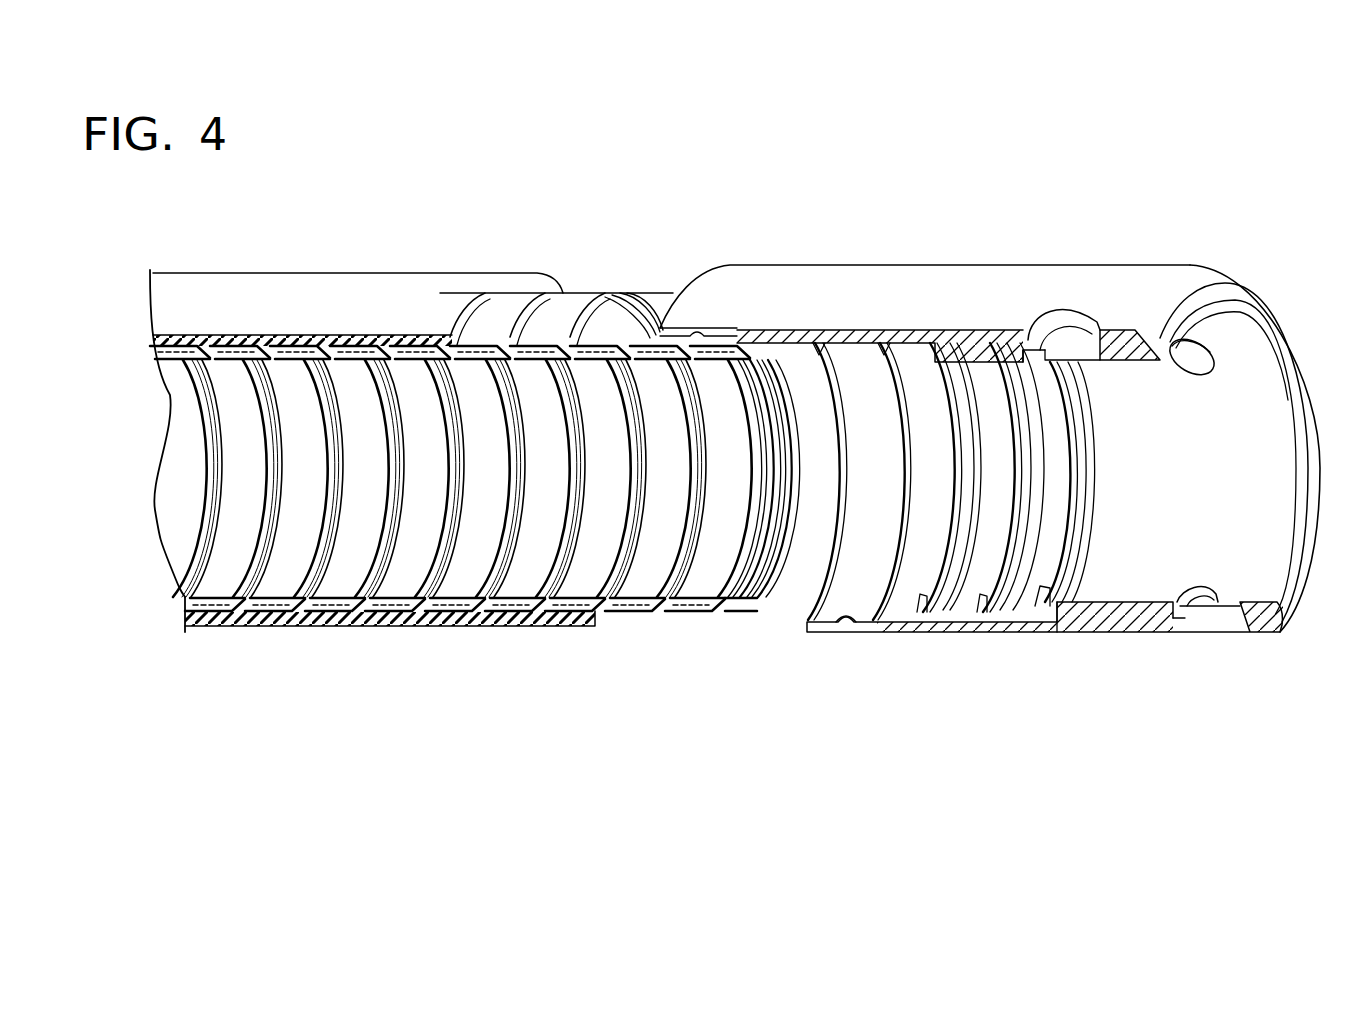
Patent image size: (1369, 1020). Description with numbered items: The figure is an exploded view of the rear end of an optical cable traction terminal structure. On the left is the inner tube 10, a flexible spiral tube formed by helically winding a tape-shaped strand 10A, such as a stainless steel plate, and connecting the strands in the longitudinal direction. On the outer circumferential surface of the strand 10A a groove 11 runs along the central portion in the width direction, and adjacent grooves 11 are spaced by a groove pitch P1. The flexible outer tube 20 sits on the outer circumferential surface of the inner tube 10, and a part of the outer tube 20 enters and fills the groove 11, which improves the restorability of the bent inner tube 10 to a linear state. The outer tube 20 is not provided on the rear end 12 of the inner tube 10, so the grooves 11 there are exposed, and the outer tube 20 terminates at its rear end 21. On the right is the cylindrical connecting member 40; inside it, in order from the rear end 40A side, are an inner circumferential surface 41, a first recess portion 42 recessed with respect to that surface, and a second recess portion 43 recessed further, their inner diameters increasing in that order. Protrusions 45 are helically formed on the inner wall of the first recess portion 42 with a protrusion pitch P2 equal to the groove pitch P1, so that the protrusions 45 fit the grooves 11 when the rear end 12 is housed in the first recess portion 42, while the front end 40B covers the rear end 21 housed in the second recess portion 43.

The inner tube 10 is at (475, 553).
The strand 10A is at (397, 580).
The groove 11 is at (522, 327).
The rear end of the inner tube 12 is at (707, 583).
The outer tube 20 is at (411, 447).
The rear end of the outer tube 21 is at (553, 620).
The connecting member 40 is at (990, 467).
The rear end of the connecting member 40A is at (1131, 276).
The front end of the connecting member 40B is at (727, 280).
The inner circumferential surface 41 is at (1257, 548).
The first recess portion 42 is at (1058, 612).
The second recess portion 43 is at (855, 625).
The protrusion 45 is at (918, 606).
The groove pitch P1 is at (563, 340).
The protrusion pitch P2 is at (930, 634).